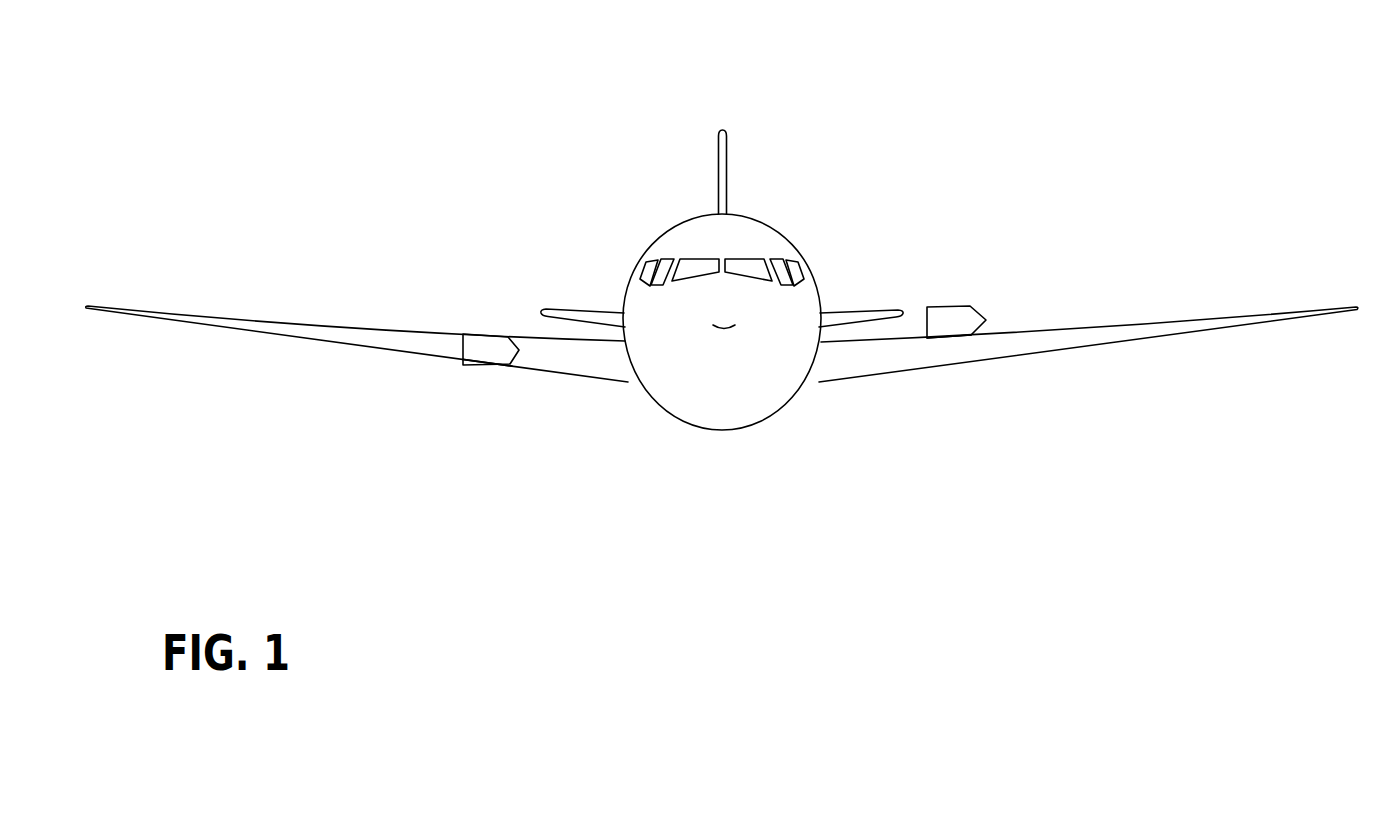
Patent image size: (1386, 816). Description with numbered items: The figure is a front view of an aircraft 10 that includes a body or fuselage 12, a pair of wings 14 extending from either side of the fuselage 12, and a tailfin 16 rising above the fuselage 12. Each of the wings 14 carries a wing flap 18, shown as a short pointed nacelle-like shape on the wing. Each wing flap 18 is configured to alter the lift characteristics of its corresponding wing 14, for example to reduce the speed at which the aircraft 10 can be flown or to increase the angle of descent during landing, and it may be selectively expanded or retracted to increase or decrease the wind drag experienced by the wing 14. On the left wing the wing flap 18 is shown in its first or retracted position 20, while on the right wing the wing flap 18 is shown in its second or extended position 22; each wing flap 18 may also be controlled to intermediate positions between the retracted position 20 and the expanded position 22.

The aircraft 10 is at (472, 158).
The fuselage 12 is at (653, 235).
The wing 14 is at (247, 313).
The tailfin 16 is at (732, 173).
The wing flap 18 is at (487, 328).
The retracted position 20 is at (487, 373).
The expanded position 22 is at (948, 343).